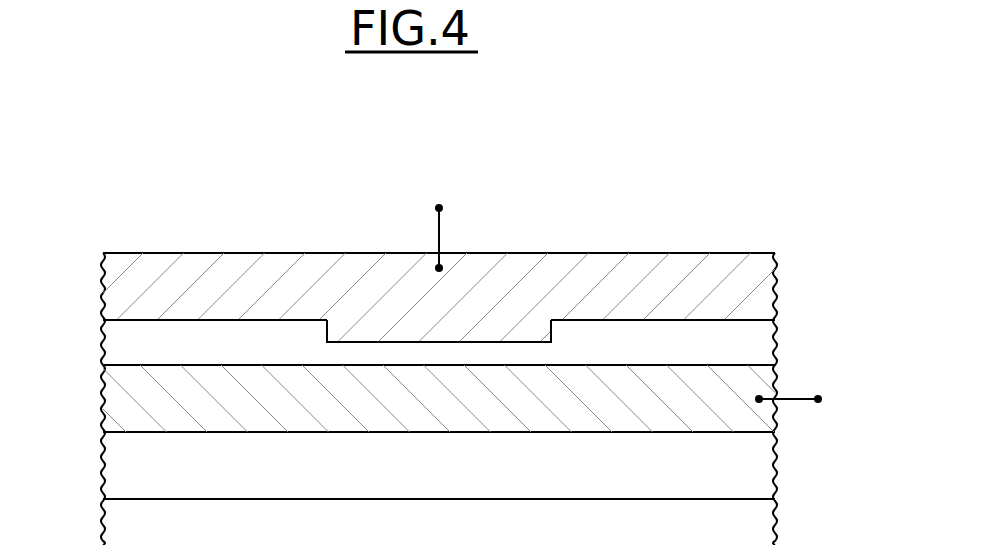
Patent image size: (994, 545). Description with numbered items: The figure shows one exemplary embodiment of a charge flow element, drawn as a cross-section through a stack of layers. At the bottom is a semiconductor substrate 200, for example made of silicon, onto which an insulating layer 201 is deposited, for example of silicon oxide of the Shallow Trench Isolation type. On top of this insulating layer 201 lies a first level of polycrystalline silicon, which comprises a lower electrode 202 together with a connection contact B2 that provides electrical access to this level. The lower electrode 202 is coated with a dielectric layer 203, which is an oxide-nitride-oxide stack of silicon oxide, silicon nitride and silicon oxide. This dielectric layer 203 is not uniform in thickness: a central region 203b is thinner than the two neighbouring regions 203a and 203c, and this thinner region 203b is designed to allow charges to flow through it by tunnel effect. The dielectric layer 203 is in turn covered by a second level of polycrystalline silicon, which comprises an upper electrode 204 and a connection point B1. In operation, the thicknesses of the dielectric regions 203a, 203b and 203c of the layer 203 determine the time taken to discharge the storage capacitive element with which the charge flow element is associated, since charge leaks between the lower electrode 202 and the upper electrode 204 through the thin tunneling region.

The semiconductor substrate 200 is at (113, 534).
The insulating layer 201 is at (113, 467).
The lower electrode 202 is at (113, 399).
The dielectric layer 203 is at (113, 342).
The dielectric region 203a is at (233, 333).
The thinner dielectric region 203b is at (376, 353).
The dielectric region 203c is at (670, 355).
The upper electrode 204 is at (113, 278).
The connection point B1 is at (437, 226).
The connection contact B2 is at (793, 387).